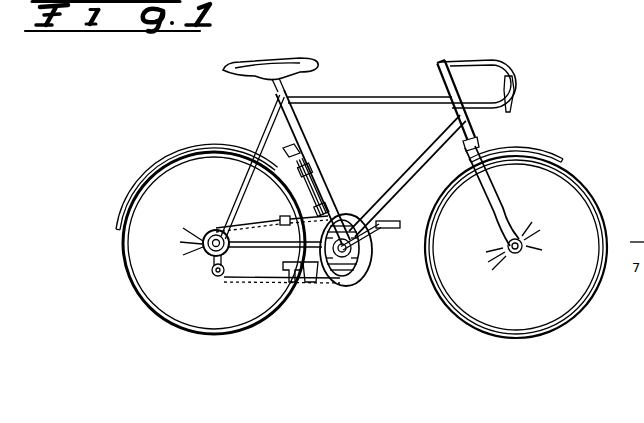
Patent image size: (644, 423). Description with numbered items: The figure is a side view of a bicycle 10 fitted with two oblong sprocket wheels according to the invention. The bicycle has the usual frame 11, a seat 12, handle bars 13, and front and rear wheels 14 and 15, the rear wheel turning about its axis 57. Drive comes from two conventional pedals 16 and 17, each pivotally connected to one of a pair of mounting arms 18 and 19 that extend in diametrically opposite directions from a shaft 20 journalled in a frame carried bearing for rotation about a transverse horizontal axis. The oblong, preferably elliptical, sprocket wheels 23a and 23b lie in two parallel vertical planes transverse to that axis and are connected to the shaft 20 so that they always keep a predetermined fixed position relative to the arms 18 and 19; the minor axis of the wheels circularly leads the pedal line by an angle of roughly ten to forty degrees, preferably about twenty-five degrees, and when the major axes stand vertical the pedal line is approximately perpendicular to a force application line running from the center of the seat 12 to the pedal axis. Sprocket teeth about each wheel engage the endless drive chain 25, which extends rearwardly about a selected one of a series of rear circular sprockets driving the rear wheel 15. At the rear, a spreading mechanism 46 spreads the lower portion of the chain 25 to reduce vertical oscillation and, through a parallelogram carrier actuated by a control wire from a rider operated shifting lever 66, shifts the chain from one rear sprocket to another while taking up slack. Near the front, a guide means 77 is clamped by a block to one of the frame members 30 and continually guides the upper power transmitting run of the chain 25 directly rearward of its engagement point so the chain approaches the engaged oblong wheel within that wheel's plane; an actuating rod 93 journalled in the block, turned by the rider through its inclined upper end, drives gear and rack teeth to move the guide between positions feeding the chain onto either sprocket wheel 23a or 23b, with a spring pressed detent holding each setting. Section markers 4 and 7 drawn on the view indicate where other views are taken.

The bicycle 10 is at (541, 94).
The frame 11 is at (292, 110).
The seat 12 is at (316, 60).
The handle bars 13 is at (483, 59).
The front wheel 14 is at (563, 158).
The rear wheel 15 is at (157, 316).
The pedal 16 is at (396, 229).
The pedal 17 is at (294, 284).
The mounting arm 18 is at (387, 258).
The mounting arm 19 is at (312, 284).
The shaft 20 is at (346, 287).
The oblong sprocket wheel 23a is at (372, 275).
The oblong sprocket wheel 23b is at (360, 212).
The drive chain 25 is at (270, 285).
The frame member 30 is at (302, 134).
The spreading mechanism 46 is at (209, 268).
The axis of rear wheel 57 is at (201, 247).
The shifting lever 66 is at (422, 158).
The guide means 77 is at (293, 210).
The actuating rod 93 is at (312, 175).
The section line 7 is at (215, 213).
The section line 4 is at (168, 205).